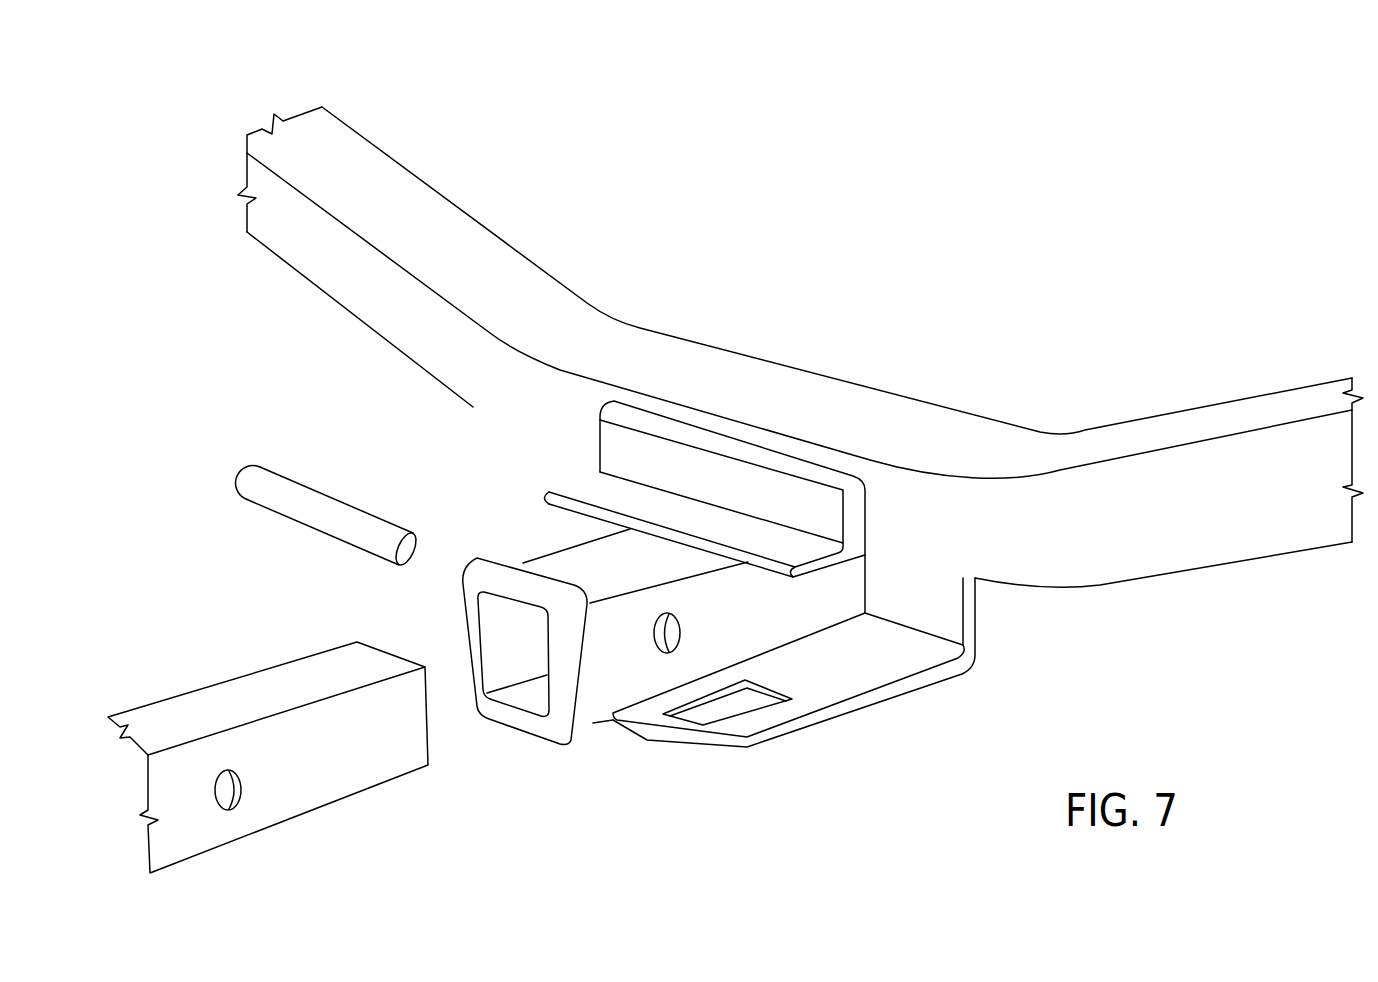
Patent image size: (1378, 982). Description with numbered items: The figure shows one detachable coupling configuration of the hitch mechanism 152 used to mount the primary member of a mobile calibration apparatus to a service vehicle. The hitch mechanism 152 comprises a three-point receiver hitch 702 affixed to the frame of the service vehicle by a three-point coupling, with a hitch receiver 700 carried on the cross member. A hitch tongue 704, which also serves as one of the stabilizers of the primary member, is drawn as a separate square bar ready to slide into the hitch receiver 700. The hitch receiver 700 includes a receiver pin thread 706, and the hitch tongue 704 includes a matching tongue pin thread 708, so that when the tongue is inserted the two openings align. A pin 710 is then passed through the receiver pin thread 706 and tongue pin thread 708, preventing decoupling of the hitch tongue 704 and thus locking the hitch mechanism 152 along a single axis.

The hitch mechanism 152 is at (693, 116).
The hitch receiver 700 is at (486, 558).
The 3-point receiver hitch 702 is at (356, 310).
The hitch tongue 704 is at (293, 663).
The receiver pin thread 706 is at (681, 635).
The tongue pin thread 708 is at (243, 792).
The pin 710 is at (250, 481).